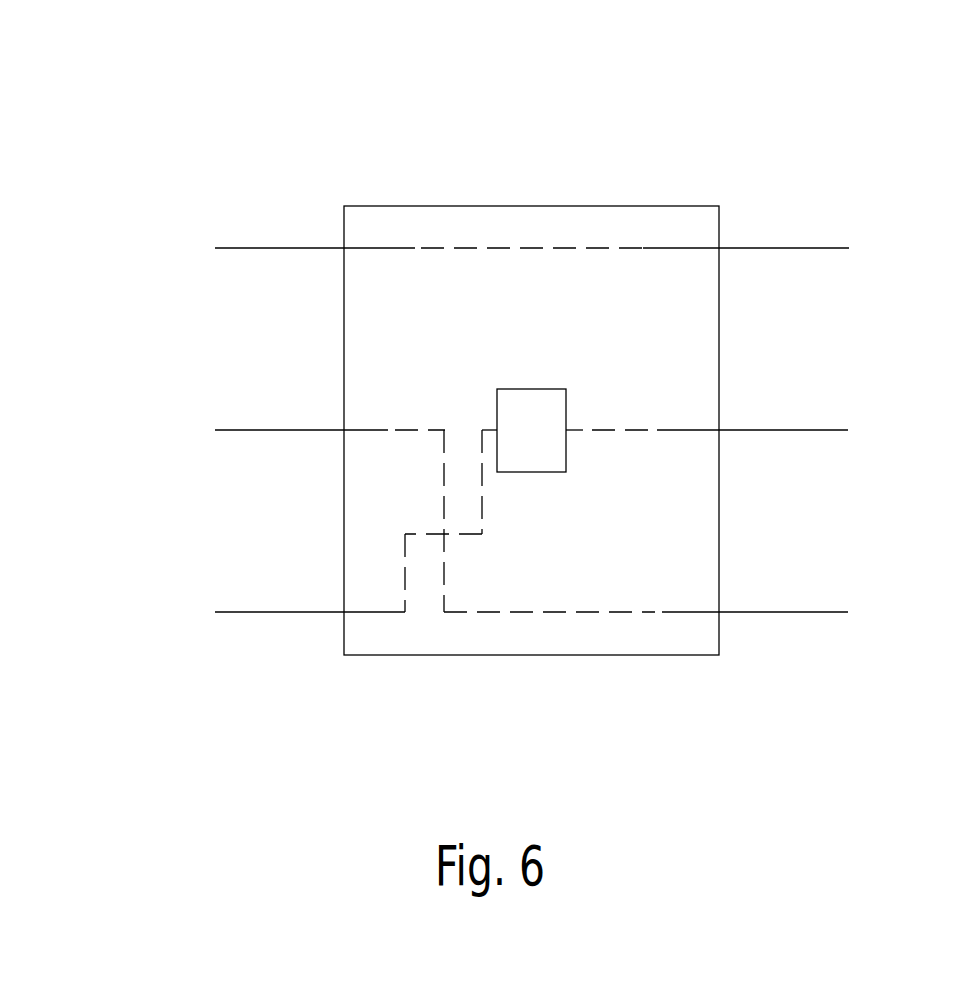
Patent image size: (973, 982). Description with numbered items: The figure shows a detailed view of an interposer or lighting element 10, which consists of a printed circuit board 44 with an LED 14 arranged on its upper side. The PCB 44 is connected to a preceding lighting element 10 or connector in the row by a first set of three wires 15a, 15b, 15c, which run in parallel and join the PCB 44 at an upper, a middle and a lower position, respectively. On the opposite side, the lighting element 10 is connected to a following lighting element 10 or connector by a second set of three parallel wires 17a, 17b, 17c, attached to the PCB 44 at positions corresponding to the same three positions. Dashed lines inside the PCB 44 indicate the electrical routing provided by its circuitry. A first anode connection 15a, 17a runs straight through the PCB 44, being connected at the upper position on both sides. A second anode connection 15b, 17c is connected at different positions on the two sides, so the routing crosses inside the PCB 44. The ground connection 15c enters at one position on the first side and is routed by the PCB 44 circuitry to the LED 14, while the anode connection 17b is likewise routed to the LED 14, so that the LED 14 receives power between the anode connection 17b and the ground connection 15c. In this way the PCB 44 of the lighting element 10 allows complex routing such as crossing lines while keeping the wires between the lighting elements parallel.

The lighting element 10 is at (390, 123).
The printed circuit board 44 is at (642, 206).
The LED 14 is at (547, 408).
The first wire of the first set (first anode connection) 15a is at (240, 248).
The second wire of the first set (second anode connection) 15b is at (240, 430).
The third wire of the first set (ground connection) 15c is at (240, 612).
The first wire of the second set (first anode connection) 17a is at (825, 248).
The second wire of the second set (anode connection) 17b is at (825, 430).
The third wire of the second set (second anode connection) 17c is at (825, 612).